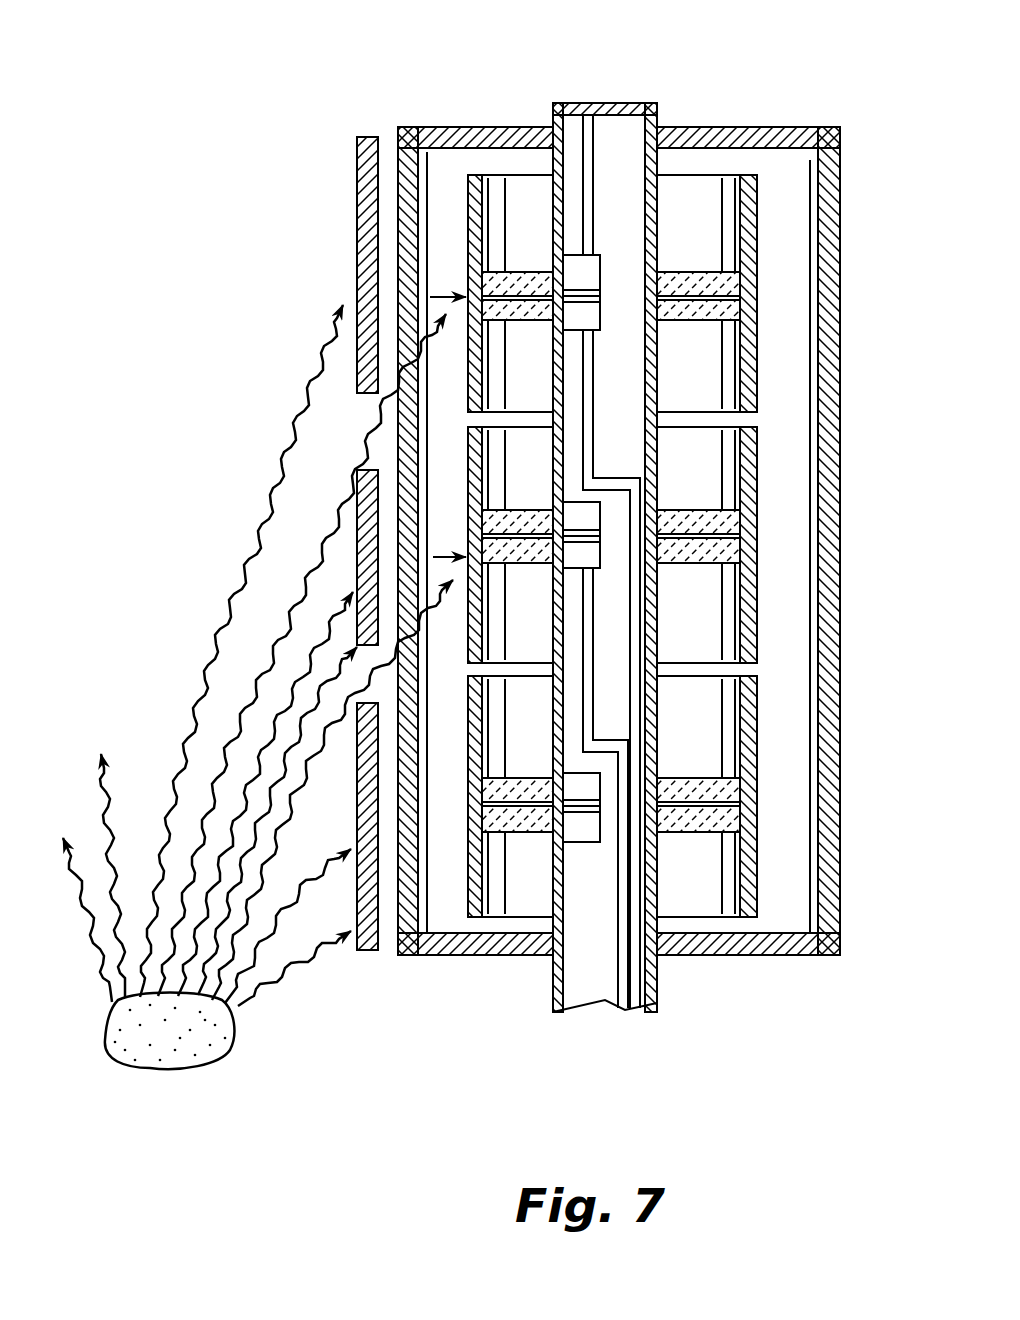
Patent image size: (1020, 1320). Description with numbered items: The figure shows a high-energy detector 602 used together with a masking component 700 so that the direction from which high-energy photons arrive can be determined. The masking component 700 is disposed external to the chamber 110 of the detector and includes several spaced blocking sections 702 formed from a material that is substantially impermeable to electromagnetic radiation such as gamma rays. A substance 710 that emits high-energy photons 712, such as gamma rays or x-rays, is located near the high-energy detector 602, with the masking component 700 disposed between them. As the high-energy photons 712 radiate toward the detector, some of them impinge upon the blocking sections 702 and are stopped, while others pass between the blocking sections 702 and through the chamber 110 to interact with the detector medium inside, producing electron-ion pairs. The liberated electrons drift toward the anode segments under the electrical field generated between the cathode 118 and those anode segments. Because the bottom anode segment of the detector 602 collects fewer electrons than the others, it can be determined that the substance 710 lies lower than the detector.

The high-energy detector 602 is at (732, 116).
The chamber 110 is at (842, 460).
The cathode 118 is at (440, 188).
The masking component 700 is at (370, 561).
The blocking sections 702 is at (362, 162).
The high-energy photons 712 is at (218, 636).
The substance 710 is at (140, 1080).